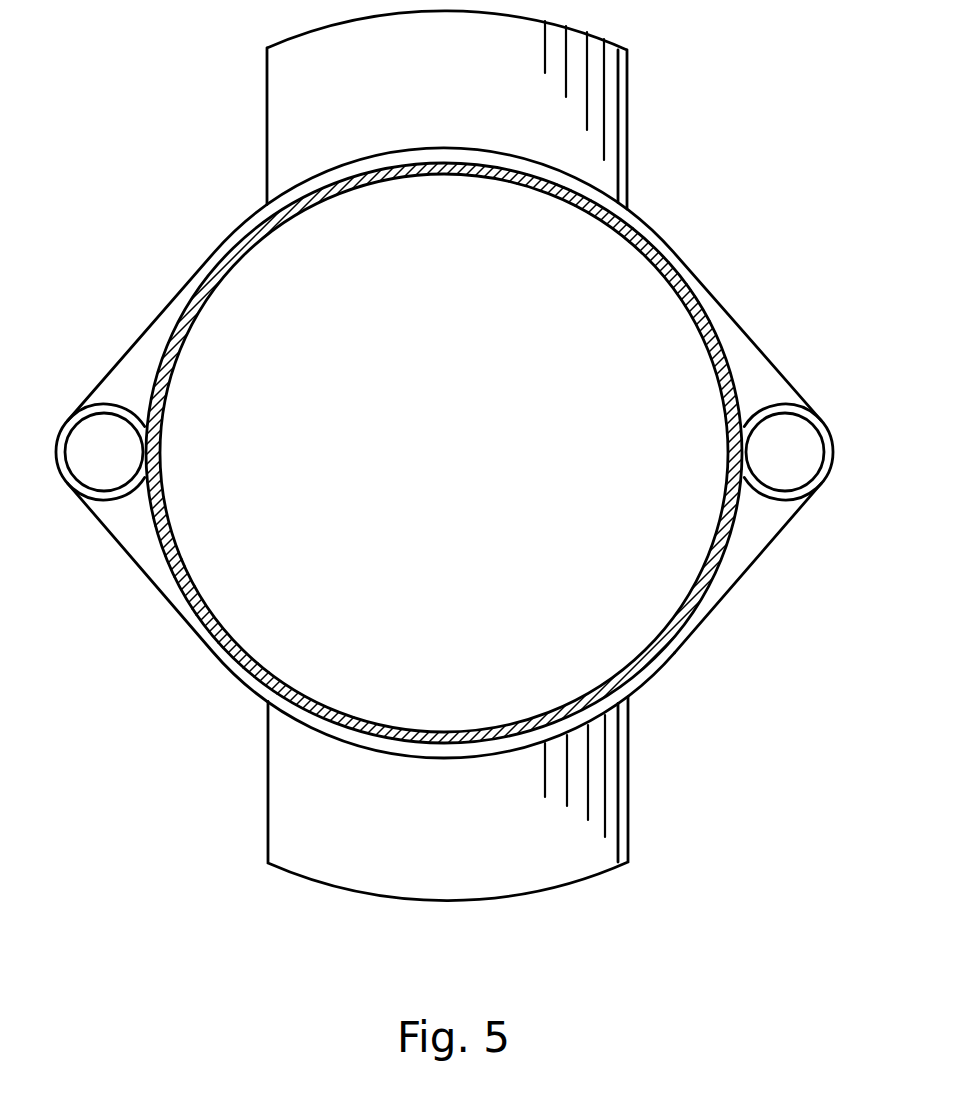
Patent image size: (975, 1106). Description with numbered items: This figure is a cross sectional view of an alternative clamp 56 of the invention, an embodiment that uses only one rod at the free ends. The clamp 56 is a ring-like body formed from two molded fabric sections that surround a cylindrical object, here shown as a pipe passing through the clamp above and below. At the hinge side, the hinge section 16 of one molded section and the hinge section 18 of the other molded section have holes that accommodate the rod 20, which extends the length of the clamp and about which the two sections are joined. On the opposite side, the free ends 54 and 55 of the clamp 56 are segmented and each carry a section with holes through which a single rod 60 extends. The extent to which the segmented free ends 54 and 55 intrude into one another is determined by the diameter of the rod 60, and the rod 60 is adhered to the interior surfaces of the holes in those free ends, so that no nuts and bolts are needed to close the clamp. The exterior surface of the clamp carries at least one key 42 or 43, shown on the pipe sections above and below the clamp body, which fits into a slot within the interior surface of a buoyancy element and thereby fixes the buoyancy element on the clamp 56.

The hinge section 16 is at (138, 393).
The hinge section 18 is at (160, 568).
The rod 20 is at (85, 467).
The key 42 is at (617, 158).
The key 43 is at (617, 818).
The free end 54 is at (783, 393).
The free end 55 is at (773, 515).
The clamp 56 is at (678, 258).
The rod 60 is at (802, 440).